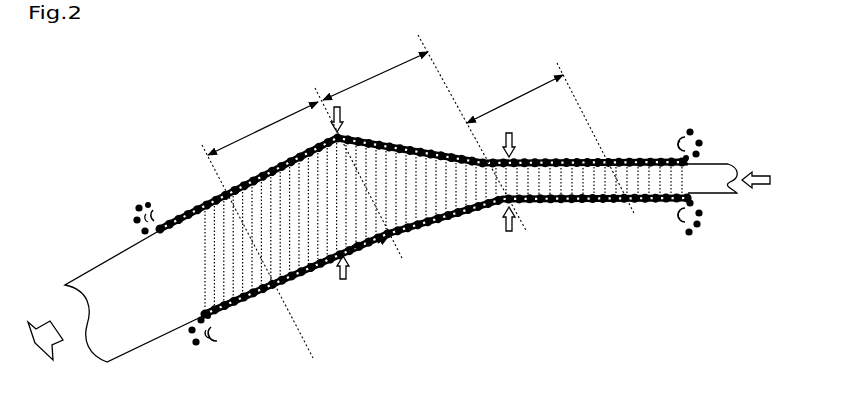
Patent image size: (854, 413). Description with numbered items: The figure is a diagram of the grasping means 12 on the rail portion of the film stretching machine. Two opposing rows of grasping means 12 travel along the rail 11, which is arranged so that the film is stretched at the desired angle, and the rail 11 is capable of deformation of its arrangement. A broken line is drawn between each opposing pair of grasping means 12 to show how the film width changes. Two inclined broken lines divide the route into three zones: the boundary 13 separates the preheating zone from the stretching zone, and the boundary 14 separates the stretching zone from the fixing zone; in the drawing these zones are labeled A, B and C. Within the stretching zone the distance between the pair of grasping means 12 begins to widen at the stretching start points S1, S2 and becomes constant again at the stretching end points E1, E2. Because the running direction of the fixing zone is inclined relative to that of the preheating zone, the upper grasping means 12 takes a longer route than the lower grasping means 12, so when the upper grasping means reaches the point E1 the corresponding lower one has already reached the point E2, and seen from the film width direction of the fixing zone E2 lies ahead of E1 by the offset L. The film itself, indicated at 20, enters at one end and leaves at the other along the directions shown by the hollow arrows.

The rail 11 is at (676, 129).
The grasping means 12 is at (706, 140).
The boundary between preheating zone and stretching zone 13 is at (444, 82).
The boundary between stretching zone and fixing zone 14 is at (400, 255).
The fastener tape 20 is at (687, 180).
The stretching end point E1 is at (339, 101).
The stretching end point E2 is at (338, 276).
The stretching start point S1 is at (512, 129).
The stretching start point S2 is at (508, 236).
The region A is at (515, 99).
The region B is at (375, 76).
The region C is at (263, 128).
The offset length L is at (369, 247).